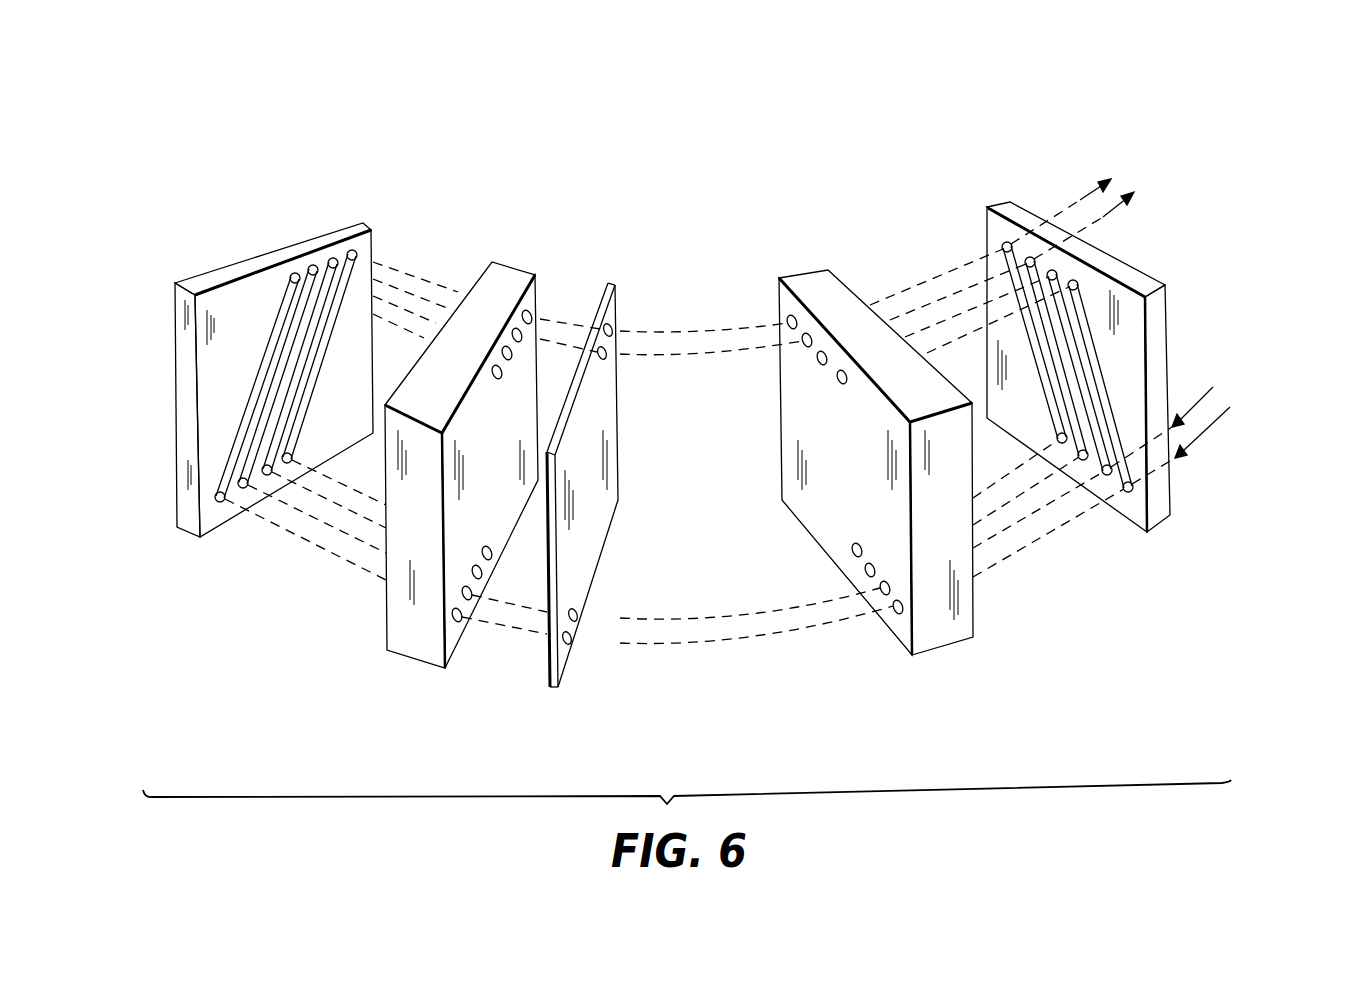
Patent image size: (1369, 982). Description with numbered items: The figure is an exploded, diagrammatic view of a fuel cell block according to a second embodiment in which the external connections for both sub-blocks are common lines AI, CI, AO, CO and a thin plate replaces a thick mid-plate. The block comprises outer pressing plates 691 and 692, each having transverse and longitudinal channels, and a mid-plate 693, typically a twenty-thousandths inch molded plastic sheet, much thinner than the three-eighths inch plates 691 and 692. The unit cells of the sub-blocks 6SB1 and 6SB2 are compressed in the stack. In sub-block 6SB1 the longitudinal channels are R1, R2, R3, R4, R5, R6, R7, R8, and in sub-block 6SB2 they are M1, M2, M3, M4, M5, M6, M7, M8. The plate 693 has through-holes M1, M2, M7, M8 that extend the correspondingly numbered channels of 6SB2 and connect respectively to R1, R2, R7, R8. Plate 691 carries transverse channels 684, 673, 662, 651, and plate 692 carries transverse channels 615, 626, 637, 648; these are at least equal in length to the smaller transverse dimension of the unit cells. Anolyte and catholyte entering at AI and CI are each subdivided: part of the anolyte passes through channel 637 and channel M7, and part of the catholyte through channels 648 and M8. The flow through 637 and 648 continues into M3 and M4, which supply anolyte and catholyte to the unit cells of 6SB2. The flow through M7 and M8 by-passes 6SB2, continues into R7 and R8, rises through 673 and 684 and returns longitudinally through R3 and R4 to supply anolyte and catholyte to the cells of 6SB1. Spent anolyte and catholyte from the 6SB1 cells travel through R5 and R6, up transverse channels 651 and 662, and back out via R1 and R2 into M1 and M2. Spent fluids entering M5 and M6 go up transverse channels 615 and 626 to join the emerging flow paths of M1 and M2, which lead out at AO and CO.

The outer pressing plate 691 is at (180, 335).
The outer pressing plate 692 is at (1165, 350).
The mid-plate 693 is at (550, 690).
The sub-block 6SB1 is at (396, 663).
The sub-block 6SB2 is at (893, 652).
The longitudinal channel R1 is at (351, 249).
The longitudinal channel R2 is at (331, 258).
The longitudinal channel R3 is at (311, 265).
The longitudinal channel R4 is at (293, 273).
The longitudinal channel R5 is at (290, 463).
The longitudinal channel R6 is at (266, 475).
The longitudinal channel R7 is at (241, 488).
The longitudinal channel R8 is at (218, 501).
The longitudinal channel M1 is at (788, 321).
The longitudinal channel M2 is at (802, 341).
The longitudinal channel M3 is at (818, 362).
The longitudinal channel M4 is at (839, 381).
The longitudinal channel M5 is at (853, 550).
The longitudinal channel M6 is at (866, 571).
The longitudinal channel M7 is at (881, 590).
The longitudinal channel M8 is at (894, 609).
The transverse channel 673 is at (272, 378).
The transverse channel 684 is at (262, 410).
The transverse channel 651 is at (326, 362).
The transverse channel 662 is at (300, 378).
The transverse channel 626 is at (1067, 372).
The transverse channel 637 is at (1086, 392).
The transverse channel 615 is at (1035, 365).
The transverse channel 648 is at (1117, 407).
The anolyte outlet line AO is at (1080, 200).
The catholyte outlet line CO is at (1103, 217).
The anolyte inlet line AI is at (1192, 412).
The catholyte inlet line CI is at (1208, 432).